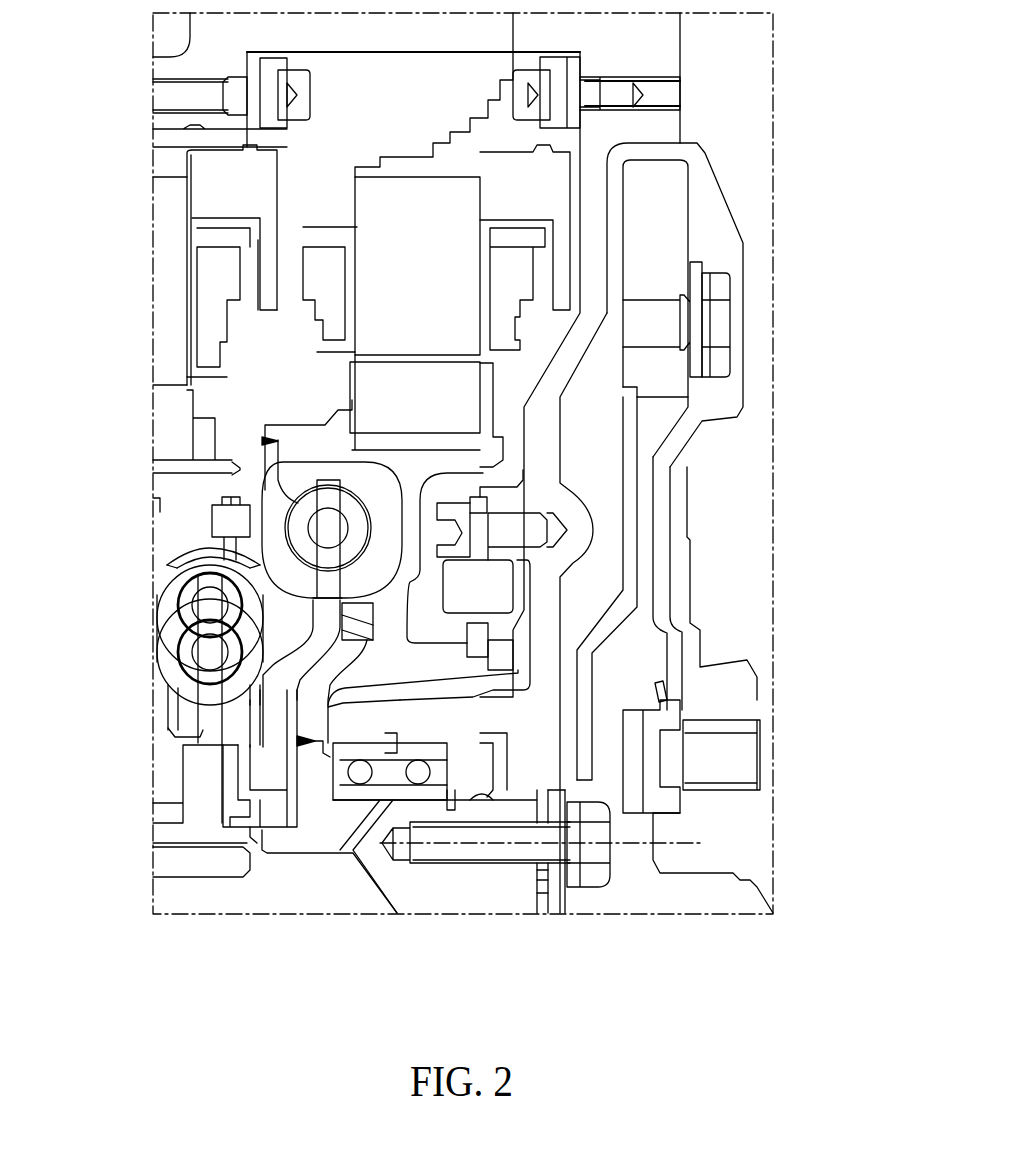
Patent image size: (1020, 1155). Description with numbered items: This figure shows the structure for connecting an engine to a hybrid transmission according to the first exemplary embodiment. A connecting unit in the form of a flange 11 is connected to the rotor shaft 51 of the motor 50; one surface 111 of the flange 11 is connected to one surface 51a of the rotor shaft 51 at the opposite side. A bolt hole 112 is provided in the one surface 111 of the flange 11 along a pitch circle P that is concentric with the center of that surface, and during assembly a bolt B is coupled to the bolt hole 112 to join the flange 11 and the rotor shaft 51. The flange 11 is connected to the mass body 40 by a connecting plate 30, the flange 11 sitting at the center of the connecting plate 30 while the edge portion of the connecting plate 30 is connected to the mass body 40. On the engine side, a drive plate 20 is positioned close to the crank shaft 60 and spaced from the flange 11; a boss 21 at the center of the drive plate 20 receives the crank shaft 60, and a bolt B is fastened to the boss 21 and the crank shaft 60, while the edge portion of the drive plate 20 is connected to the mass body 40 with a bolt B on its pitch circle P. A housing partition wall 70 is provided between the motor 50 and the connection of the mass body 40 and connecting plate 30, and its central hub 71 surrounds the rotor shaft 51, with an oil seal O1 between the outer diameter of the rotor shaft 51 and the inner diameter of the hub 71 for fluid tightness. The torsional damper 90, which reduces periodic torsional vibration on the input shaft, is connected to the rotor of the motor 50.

The motor 50 is at (347, 189).
The mass body 40 is at (665, 205).
The housing partition wall 70 is at (567, 365).
The connecting plate 30 is at (633, 465).
The drive plate 20 is at (667, 515).
The rotor shaft 51 is at (520, 808).
The one surface of the rotor shaft 51a is at (547, 935).
The bolt B is at (730, 757).
The boss 21 is at (677, 803).
The crank shaft 60 is at (738, 833).
The bolt hole 112 is at (573, 857).
The flange 11 is at (560, 898).
The one surface of the flange 111 is at (537, 883).
The pitch circle P is at (428, 845).
The torsional damper 90 is at (170, 535).
The hub 71 is at (347, 722).
The oil seal O1 is at (497, 757).